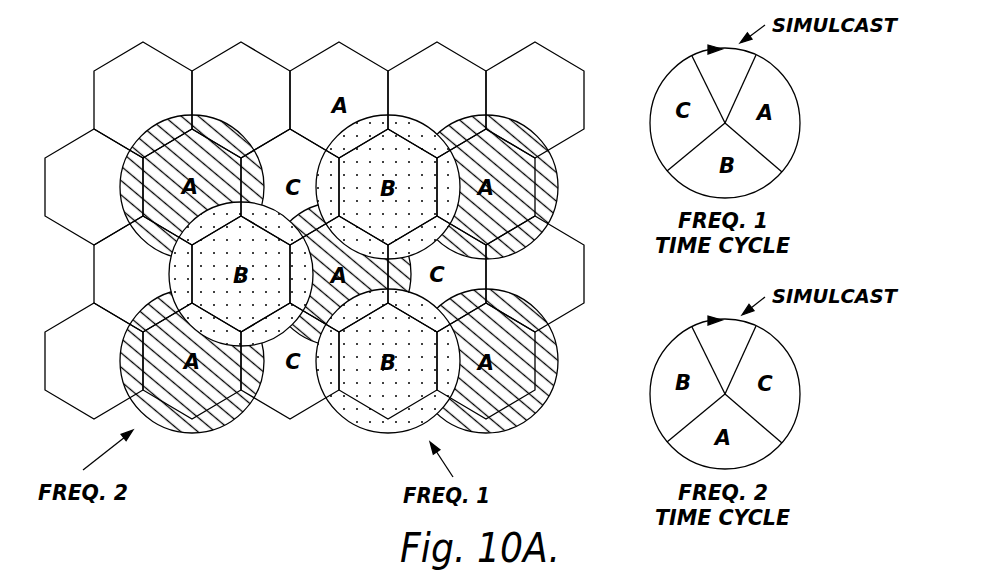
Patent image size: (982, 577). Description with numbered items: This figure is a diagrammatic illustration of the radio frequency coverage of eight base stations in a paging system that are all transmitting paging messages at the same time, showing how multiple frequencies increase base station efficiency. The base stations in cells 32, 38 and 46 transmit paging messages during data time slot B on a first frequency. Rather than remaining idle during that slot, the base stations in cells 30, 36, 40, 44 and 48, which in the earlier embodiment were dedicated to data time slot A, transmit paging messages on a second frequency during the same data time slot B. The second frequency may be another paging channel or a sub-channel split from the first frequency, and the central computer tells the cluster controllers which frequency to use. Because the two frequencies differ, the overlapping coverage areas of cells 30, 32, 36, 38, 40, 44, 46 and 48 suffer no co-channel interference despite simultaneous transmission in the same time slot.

The cell 30 is at (486, 187).
The cell 32 is at (388, 187).
The cell 36 is at (192, 187).
The cell 38 is at (241, 274).
The cell 40 is at (192, 361).
The cell 44 is at (339, 274).
The cell 46 is at (388, 361).
The cell 48 is at (486, 361).